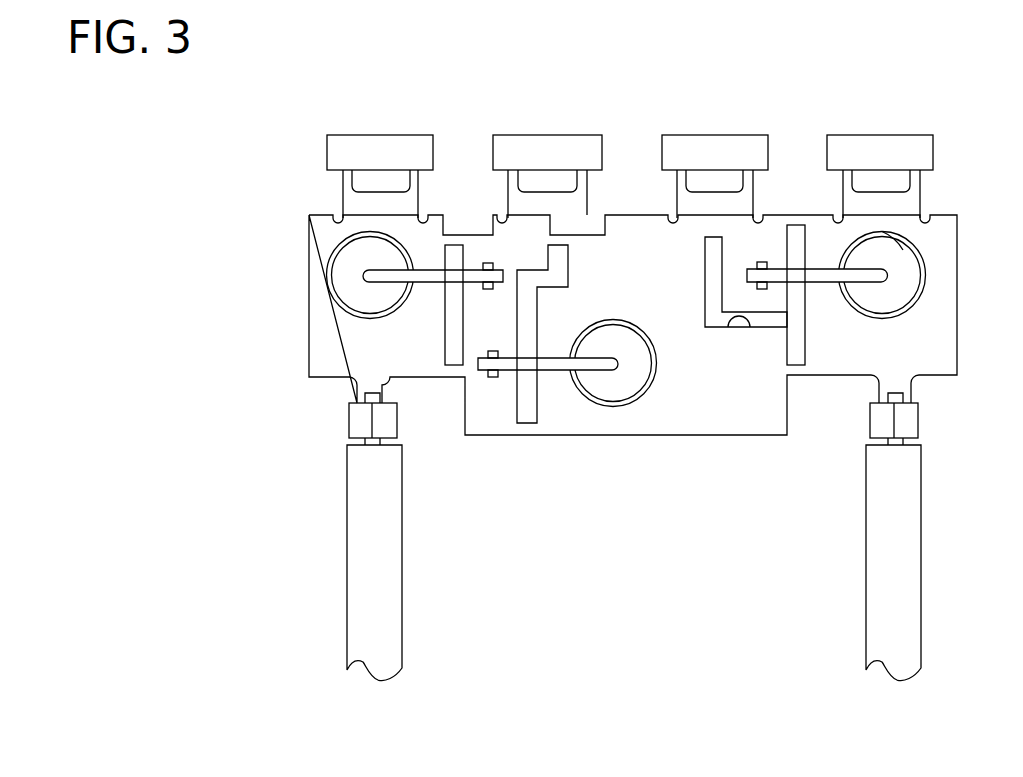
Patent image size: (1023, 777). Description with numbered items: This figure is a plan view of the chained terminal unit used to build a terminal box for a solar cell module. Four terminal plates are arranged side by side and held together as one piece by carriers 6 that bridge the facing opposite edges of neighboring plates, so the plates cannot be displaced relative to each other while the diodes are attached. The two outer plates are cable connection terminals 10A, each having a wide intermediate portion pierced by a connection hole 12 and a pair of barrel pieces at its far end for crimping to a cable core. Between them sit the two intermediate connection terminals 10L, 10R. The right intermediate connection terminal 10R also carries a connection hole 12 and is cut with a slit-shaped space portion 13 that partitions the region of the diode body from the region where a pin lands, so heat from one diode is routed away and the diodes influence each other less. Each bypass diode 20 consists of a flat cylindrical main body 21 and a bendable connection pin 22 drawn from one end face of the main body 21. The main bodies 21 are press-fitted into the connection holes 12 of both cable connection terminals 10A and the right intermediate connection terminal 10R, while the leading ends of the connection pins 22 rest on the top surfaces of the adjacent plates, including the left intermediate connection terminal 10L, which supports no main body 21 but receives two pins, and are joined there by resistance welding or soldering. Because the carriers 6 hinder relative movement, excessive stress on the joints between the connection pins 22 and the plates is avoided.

The carrier 6 is at (450, 242).
The cable connection terminal 10A is at (375, 135).
The intermediate connection terminal 10L is at (548, 133).
The intermediate connection terminal 10R is at (712, 133).
The connection hole 12 is at (338, 270).
The space portion 13 is at (750, 327).
The bypass diode 20 is at (333, 302).
The main body 21 is at (903, 250).
The connection pin 22 is at (472, 275).